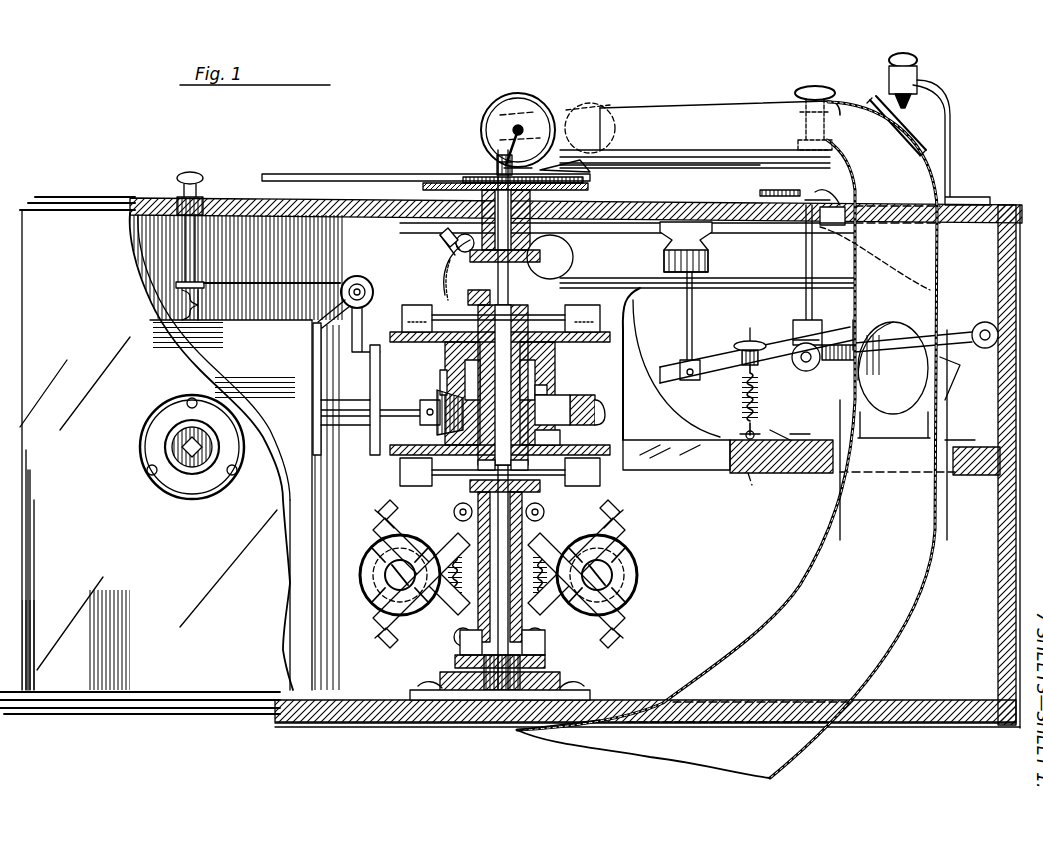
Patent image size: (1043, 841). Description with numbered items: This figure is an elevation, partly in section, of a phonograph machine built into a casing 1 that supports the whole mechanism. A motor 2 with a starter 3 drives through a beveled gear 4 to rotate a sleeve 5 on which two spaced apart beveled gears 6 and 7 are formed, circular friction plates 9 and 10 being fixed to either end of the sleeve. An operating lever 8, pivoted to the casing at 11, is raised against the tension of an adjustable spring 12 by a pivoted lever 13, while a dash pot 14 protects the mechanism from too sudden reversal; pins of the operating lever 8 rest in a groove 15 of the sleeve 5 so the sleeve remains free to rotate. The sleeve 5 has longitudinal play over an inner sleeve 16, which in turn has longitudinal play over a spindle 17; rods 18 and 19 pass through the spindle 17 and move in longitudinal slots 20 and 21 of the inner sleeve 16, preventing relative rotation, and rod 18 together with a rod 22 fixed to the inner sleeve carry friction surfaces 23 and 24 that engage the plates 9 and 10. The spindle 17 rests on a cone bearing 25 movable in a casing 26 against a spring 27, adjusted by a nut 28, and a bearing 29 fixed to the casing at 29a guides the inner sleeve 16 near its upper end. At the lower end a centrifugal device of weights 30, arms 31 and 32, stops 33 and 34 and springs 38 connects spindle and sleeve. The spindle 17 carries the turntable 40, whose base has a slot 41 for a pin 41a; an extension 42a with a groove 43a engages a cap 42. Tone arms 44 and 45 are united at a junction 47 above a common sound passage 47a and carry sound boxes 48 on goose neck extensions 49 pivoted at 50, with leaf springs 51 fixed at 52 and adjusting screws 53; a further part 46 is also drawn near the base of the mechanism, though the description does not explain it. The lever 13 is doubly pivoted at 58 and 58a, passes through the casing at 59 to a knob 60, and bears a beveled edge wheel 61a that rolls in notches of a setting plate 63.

The casing 1 is at (1028, 266).
The motor 2 is at (237, 451).
The starter 3 is at (198, 174).
The beveled gear 4 is at (440, 396).
The sleeve 5 is at (448, 348).
The beveled gear 6 is at (548, 390).
The beveled gear 7 is at (556, 437).
The operating lever 8 is at (600, 395).
The friction plate 9 is at (560, 347).
The friction plate 10 is at (600, 425).
The pivot 11 is at (988, 322).
The adjustable spring 12 is at (757, 392).
The pivoted lever 13 is at (805, 300).
The dash pot 14 is at (695, 290).
The groove 15 is at (530, 407).
The inner sleeve 16 is at (511, 468).
The spindle 17 is at (495, 468).
The rod 18 is at (520, 333).
The rod 19 is at (512, 527).
The longitudinal slot 20 is at (485, 333).
The longitudinal slot 21 is at (497, 526).
The rod 22 is at (535, 492).
The friction surface 23 is at (402, 328).
The friction surface 24 is at (400, 478).
The cone bearing 25 is at (528, 648).
The bearing casing 26 is at (482, 648).
The spring 27 is at (548, 678).
The nut 28 is at (548, 660).
The bearing 29 is at (470, 297).
The bearing fixing point 29a is at (665, 410).
The weights 30 is at (372, 552).
The arm 31 is at (435, 620).
The arm 32 is at (452, 530).
The stop 33 is at (498, 575).
The stop 34 is at (620, 518).
The springs 38 is at (497, 580).
The turntable 40 is at (520, 228).
The slot 41 is at (538, 425).
The pin 41a is at (462, 248).
The cap 42 is at (442, 174).
The turntable extension 42a is at (500, 160).
The groove 43a is at (490, 176).
The upper tone arm 44 is at (700, 110).
The lower tone arm 45 is at (645, 285).
The base block 46 is at (815, 440).
The junction 47 is at (732, 440).
The common sound passage 47a is at (704, 644).
The sound box 48 is at (520, 105).
The goose neck extension 49 is at (560, 118).
The pivot 50 is at (595, 120).
The leaf spring 51 is at (612, 155).
The fixing point 52 is at (650, 152).
The adjusting screw 53 is at (577, 166).
The pivot 58 is at (808, 372).
The pivot 58a is at (825, 336).
The casing opening 59 is at (822, 225).
The knob 60 is at (820, 92).
The beveled edge wheel 61a is at (800, 176).
The setting plate 63 is at (815, 192).